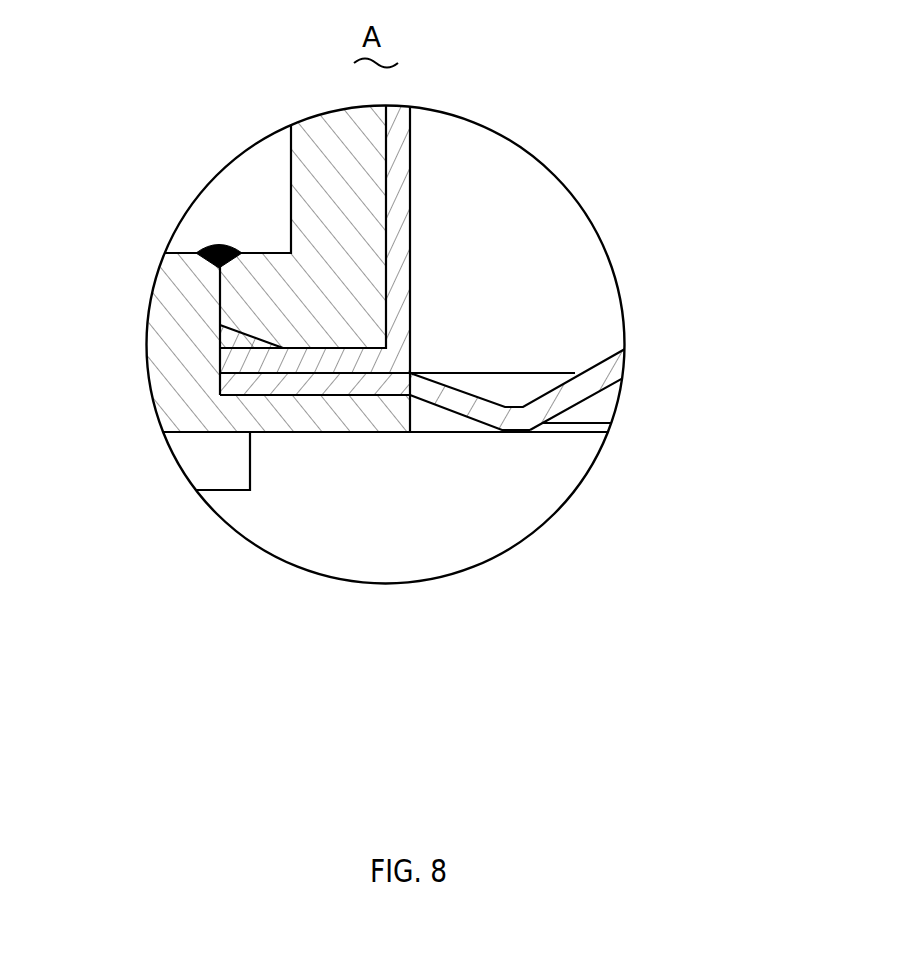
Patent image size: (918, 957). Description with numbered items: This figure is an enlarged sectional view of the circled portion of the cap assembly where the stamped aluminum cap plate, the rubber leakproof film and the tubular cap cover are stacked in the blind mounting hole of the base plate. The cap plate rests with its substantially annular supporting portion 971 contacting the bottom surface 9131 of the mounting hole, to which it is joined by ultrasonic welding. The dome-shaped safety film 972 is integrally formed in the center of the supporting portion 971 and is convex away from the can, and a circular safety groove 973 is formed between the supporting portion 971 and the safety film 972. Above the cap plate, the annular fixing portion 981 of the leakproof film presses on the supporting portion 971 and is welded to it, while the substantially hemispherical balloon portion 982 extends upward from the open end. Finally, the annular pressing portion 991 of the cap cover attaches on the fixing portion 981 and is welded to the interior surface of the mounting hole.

The pressing portion 991 is at (337, 285).
The balloon portion 982 is at (397, 150).
The fixing portion 981 is at (270, 357).
The safety film 972 is at (273, 387).
The bottom surface 9131 is at (307, 408).
The safety groove 973 is at (452, 408).
The supporting portion 971 is at (582, 382).